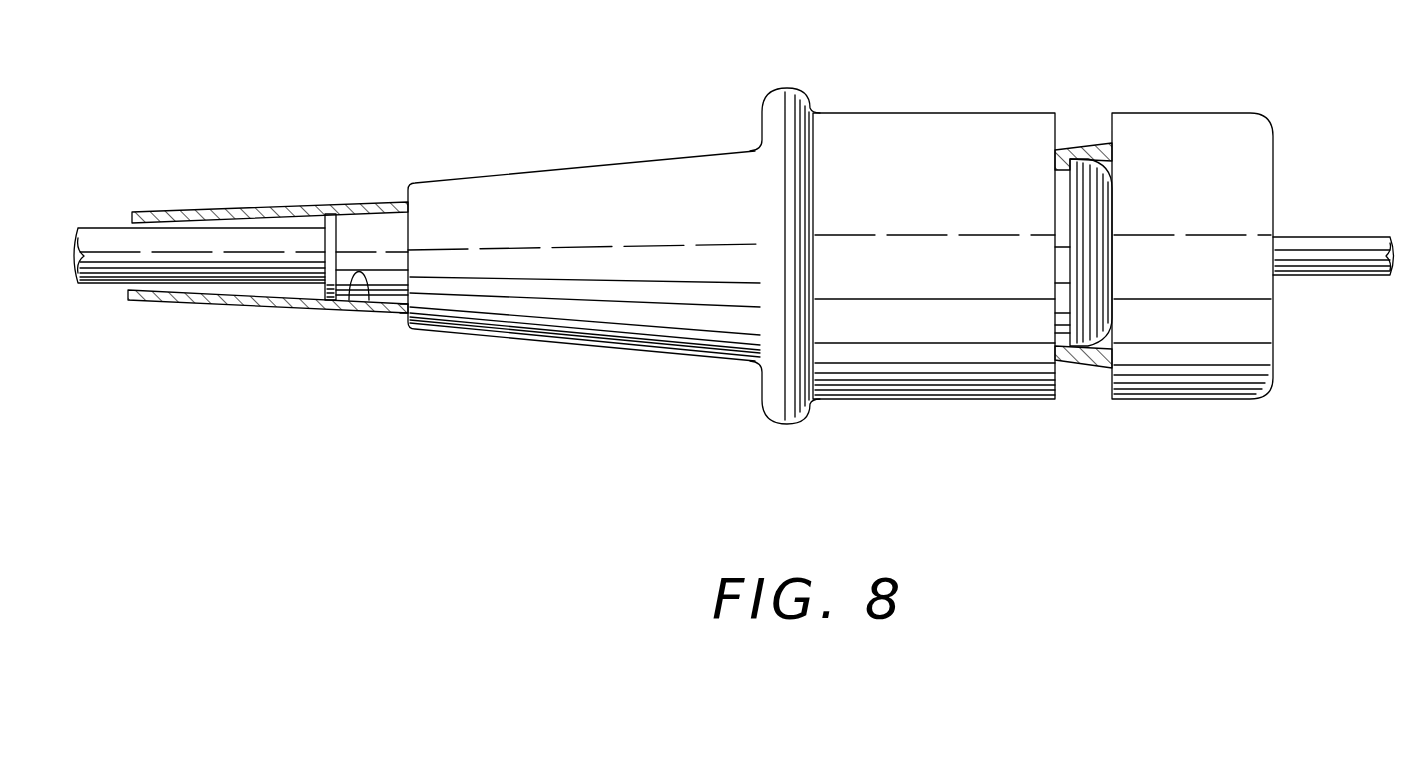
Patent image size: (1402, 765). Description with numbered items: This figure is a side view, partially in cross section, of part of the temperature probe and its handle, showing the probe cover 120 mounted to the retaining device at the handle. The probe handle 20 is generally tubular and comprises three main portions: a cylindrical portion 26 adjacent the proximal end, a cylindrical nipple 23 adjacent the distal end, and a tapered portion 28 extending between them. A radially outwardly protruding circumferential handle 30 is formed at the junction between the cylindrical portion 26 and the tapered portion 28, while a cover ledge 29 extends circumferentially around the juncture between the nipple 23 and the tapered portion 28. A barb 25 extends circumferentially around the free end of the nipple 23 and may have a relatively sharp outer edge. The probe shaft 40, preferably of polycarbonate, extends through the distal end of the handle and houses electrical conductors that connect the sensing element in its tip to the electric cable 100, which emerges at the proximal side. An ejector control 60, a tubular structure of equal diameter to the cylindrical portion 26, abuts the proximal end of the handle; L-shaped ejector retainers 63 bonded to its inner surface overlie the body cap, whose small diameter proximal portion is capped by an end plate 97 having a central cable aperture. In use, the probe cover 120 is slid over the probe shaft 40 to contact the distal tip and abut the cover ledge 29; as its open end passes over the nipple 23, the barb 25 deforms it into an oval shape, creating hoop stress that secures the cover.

The probe handle 20 is at (406, 168).
The cylindrical nipple 23 is at (356, 301).
The barb 25 is at (335, 210).
The cylindrical portion 26 is at (887, 112).
The tapered portion 28 is at (660, 158).
The cover ledge 29 is at (407, 313).
The circumferential handle 30 is at (790, 87).
The probe shaft 40 is at (215, 228).
The ejector control 60 is at (1213, 112).
The ejector retainers 63 is at (1087, 148).
The end plate 97 is at (1085, 340).
The electric cable 100 is at (1295, 236).
The probe cover 120 is at (167, 302).